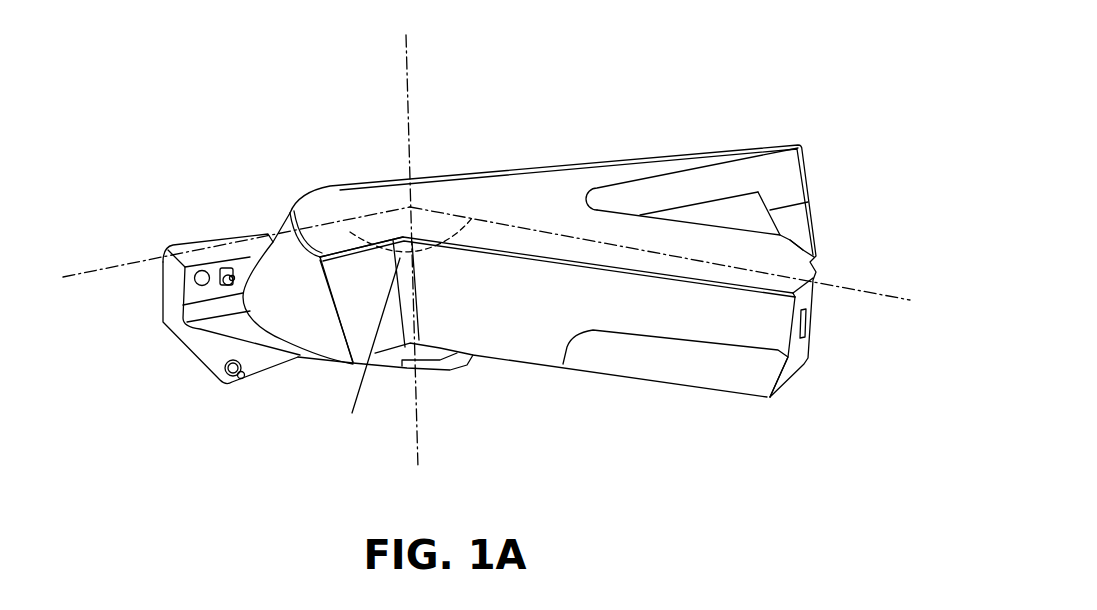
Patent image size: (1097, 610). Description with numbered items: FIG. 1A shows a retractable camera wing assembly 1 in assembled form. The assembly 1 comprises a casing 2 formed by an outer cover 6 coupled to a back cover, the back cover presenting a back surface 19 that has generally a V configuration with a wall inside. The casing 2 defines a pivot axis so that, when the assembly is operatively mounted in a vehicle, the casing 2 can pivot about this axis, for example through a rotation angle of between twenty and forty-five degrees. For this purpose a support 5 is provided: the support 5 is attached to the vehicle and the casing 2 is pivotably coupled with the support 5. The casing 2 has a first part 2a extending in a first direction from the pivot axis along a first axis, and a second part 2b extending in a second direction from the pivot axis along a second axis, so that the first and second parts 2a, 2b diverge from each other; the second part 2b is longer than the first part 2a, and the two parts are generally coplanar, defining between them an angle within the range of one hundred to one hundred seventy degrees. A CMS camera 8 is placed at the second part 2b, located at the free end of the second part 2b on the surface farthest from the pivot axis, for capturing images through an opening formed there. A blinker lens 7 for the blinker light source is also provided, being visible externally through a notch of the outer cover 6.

The retractable camera wing assembly 1 is at (172, 159).
The casing 2 is at (545, 188).
The first part 2a is at (363, 280).
The second part 2b is at (723, 247).
The support 5 is at (200, 333).
The outer cover 6 is at (783, 265).
The blinker lens 7 is at (767, 363).
The CMS camera 8 is at (810, 327).
The back surface 19 is at (702, 152).